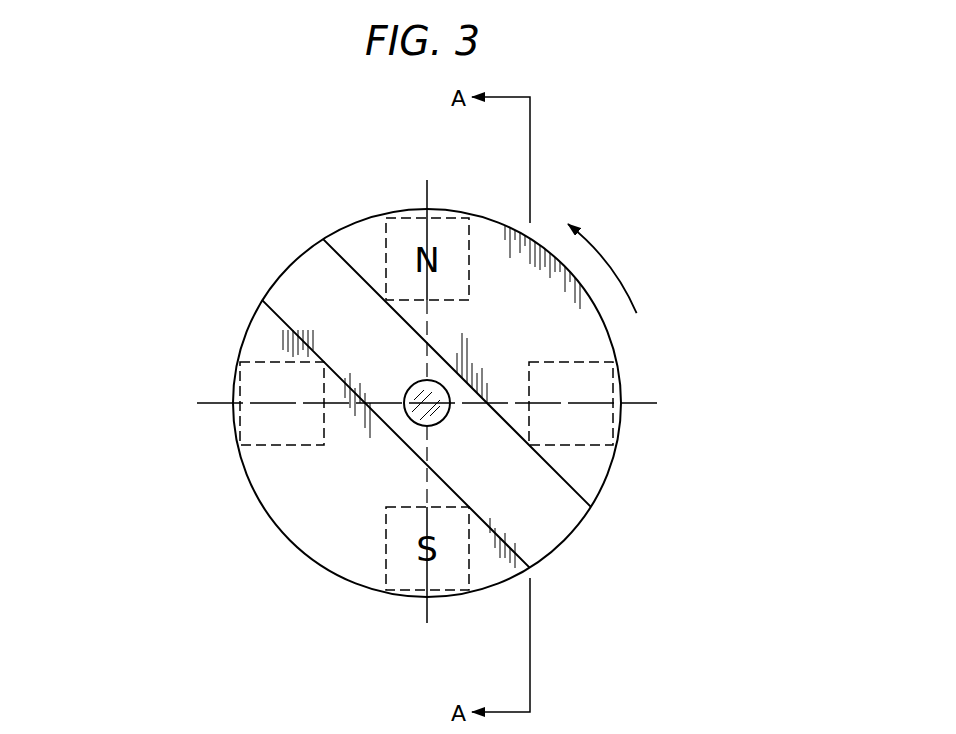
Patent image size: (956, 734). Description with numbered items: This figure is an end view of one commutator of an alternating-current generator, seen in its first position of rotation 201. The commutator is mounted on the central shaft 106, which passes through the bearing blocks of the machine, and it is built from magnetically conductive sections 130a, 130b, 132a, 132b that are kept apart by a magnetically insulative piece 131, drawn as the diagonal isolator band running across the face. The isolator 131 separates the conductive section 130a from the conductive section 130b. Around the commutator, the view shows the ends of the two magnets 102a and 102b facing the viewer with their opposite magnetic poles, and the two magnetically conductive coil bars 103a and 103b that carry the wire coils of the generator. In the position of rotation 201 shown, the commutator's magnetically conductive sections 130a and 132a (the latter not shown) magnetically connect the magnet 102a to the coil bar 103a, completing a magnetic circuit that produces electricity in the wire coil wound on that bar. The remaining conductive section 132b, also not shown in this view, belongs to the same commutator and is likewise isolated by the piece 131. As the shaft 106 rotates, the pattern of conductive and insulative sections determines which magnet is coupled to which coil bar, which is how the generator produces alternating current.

The magnet 102a is at (380, 252).
The magnet 102b is at (382, 544).
The magnetically conductive bar 103a is at (574, 357).
The magnetically conductive bar 103b is at (281, 361).
The shaft 106 is at (410, 420).
The magnetically conductive section 130a is at (508, 253).
The magnetically conductive section 130b is at (327, 538).
The magnetically insulative piece 131 is at (312, 280).
The magnetically conductive section 132a is at (611, 488).
The magnetically conductive section 132b is at (241, 489).
The first position of rotation 201 is at (610, 268).